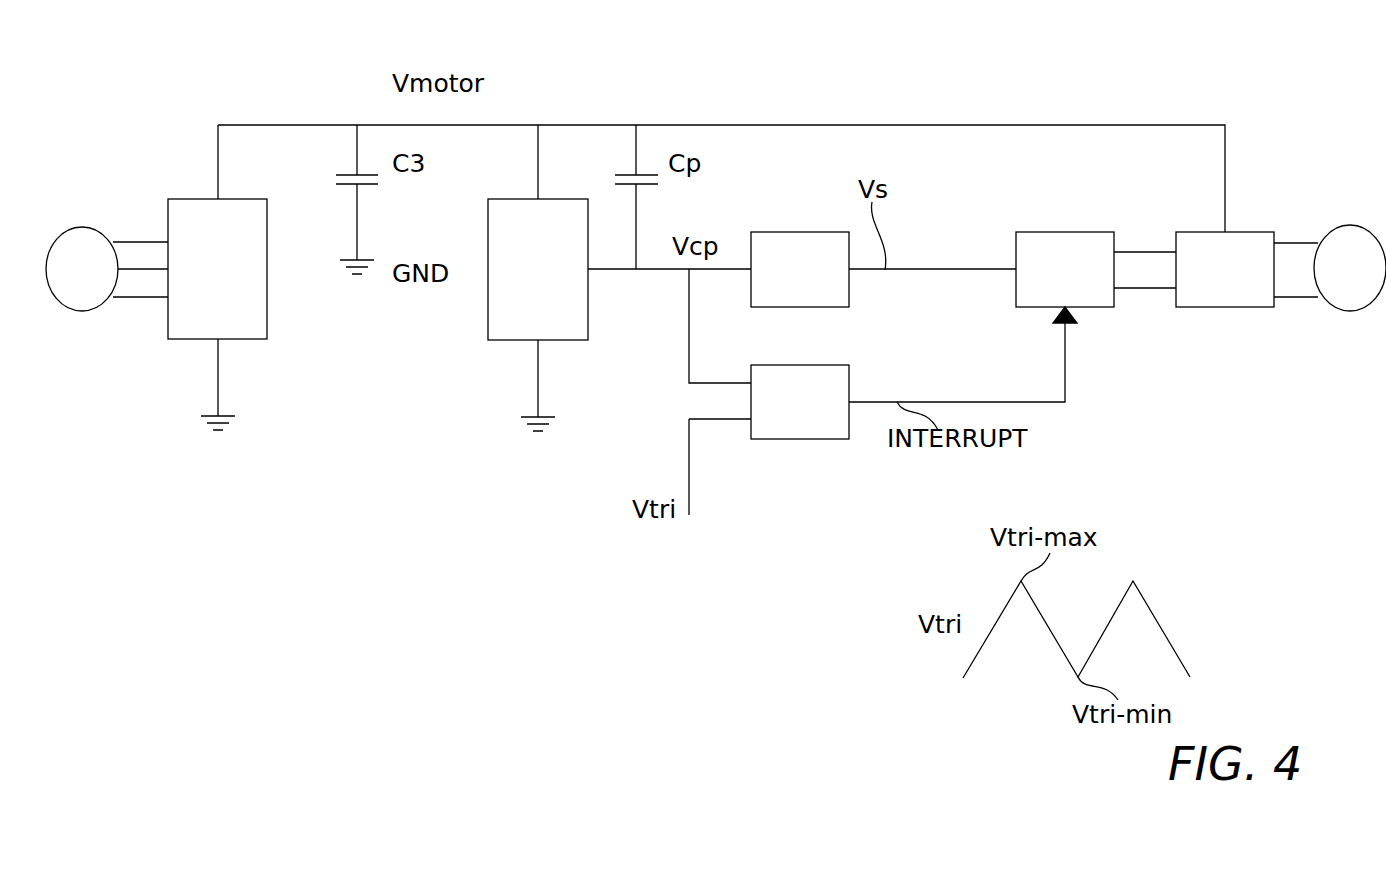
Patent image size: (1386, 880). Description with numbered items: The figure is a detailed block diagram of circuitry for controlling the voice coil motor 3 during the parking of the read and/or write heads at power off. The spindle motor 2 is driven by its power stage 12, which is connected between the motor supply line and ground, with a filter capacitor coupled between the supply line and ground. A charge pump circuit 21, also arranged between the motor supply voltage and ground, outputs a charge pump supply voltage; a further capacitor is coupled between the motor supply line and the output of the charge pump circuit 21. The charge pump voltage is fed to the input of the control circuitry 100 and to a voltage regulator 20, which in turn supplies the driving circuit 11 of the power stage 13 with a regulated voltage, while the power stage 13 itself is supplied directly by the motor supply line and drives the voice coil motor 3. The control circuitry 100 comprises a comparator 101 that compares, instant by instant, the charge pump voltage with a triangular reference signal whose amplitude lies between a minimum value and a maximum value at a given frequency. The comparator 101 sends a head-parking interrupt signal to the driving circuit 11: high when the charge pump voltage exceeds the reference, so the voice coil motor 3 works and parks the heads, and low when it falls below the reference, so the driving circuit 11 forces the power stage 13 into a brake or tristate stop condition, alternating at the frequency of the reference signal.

The spindle motor 2 is at (92, 285).
The power stage 12 is at (238, 281).
The charge pump circuit 21 is at (560, 281).
The voltage regulator 20 is at (817, 284).
The driving circuit 11 is at (1082, 284).
The power stage 13 is at (1242, 284).
The voice coil motor 3 is at (1360, 284).
The comparator 101 is at (826, 414).
The control circuitry 100 is at (605, 458).